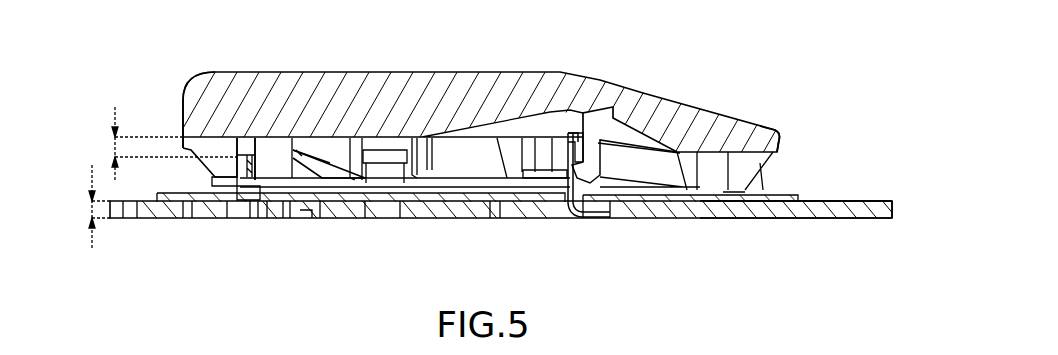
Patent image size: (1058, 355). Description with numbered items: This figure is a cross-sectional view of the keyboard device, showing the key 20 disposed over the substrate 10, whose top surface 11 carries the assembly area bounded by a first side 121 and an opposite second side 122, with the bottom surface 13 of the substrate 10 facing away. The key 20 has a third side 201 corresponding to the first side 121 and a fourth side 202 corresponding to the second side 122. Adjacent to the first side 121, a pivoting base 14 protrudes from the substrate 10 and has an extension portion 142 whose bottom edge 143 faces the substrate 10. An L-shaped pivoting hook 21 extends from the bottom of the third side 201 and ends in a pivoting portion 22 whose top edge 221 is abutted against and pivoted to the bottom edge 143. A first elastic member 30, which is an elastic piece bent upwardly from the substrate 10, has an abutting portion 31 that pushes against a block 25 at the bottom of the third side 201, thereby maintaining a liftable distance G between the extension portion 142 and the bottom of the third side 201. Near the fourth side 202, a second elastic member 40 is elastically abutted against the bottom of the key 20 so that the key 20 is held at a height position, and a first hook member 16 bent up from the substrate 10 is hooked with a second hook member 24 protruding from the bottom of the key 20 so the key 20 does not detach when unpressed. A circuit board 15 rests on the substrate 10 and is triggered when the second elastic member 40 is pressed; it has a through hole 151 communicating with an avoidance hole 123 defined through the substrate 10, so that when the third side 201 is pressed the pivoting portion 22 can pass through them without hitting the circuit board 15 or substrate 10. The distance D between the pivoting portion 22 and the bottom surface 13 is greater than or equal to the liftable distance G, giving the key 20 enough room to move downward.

The key 20 is at (477, 72).
The third side 201 is at (181, 108).
The block 25 is at (185, 97).
The fourth side 202 is at (780, 133).
The pivoting base 14 is at (255, 165).
The extension portion 142 is at (248, 163).
The abutting portion 31 is at (212, 182).
The pivoting hook 21 is at (302, 175).
The top edge 221 is at (325, 150).
The first elastic member 30 is at (368, 142).
The first hook member 16 is at (575, 140).
The second hook member 24 is at (602, 160).
The second elastic member 40 is at (543, 177).
The circuit board 15 is at (420, 202).
The substrate 10 is at (678, 218).
The top surface 11 is at (850, 200).
The second side 122 is at (893, 207).
The bottom surface 13 is at (817, 218).
The first side 121 is at (130, 215).
The pivoting portion 22 is at (250, 195).
The bottom edge 143 is at (267, 200).
The avoidance hole 123 is at (287, 208).
The through hole 151 is at (305, 215).
The liftable distance G is at (108, 147).
The distance D is at (90, 205).